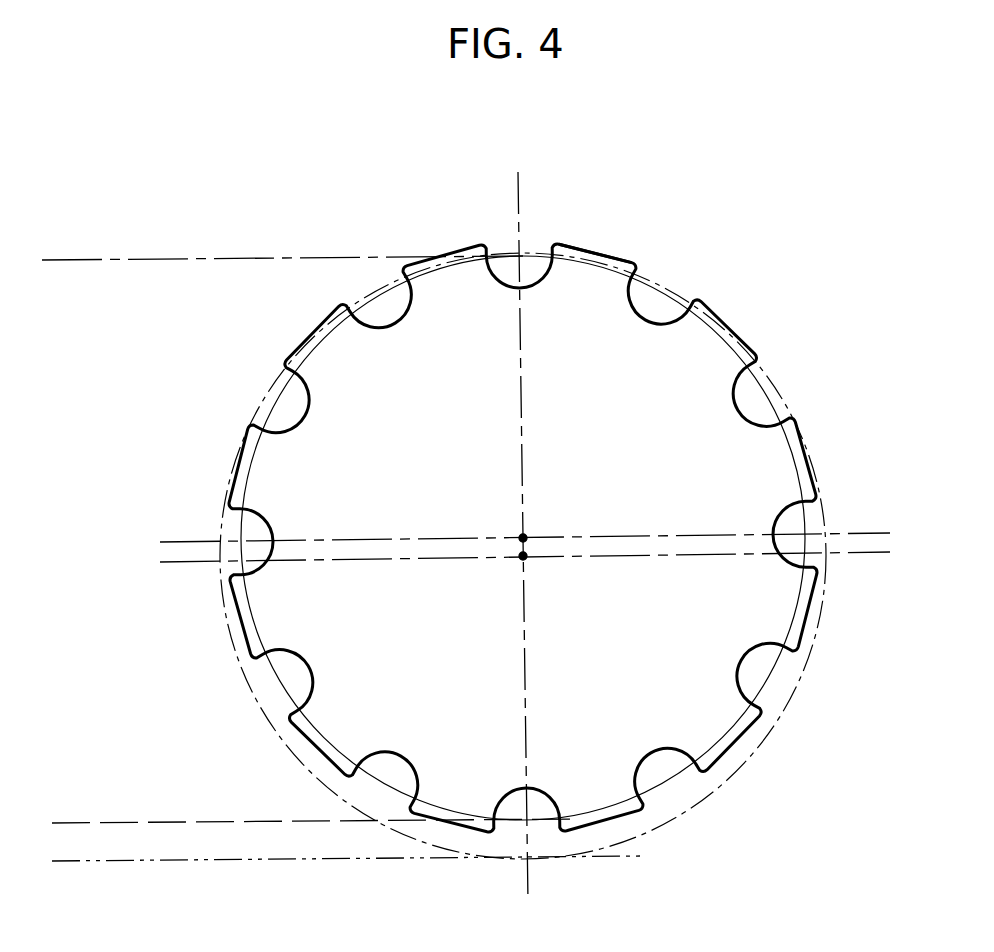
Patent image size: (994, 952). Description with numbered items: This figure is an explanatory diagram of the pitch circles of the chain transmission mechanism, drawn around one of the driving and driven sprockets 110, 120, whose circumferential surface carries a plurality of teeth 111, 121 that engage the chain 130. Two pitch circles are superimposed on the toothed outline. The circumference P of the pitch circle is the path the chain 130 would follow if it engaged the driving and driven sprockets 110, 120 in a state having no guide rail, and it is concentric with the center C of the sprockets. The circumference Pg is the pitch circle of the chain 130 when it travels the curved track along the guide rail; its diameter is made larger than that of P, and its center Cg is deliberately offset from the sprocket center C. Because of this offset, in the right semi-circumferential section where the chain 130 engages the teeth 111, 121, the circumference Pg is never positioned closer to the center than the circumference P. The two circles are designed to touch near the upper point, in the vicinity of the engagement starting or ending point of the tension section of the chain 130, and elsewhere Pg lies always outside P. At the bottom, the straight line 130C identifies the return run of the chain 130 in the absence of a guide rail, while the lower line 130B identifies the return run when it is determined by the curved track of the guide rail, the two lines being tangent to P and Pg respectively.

The driving sprocket 110 is at (345, 483).
The driven sprocket 120 is at (523, 538).
The teeth 111 is at (585, 276).
The teeth 121 is at (595, 253).
The chain 130 is at (315, 257).
The return run of the chain in the absence of a guide rail 130C is at (233, 821).
The return run of the chain 130B is at (270, 860).
The circumference of the pitch circle P is at (797, 605).
The circumference of the pitch circle along the guide rail Pg is at (790, 703).
The center of the driving and driven sprockets C is at (526, 536).
The center of the pitch circle Pg Cg is at (526, 560).